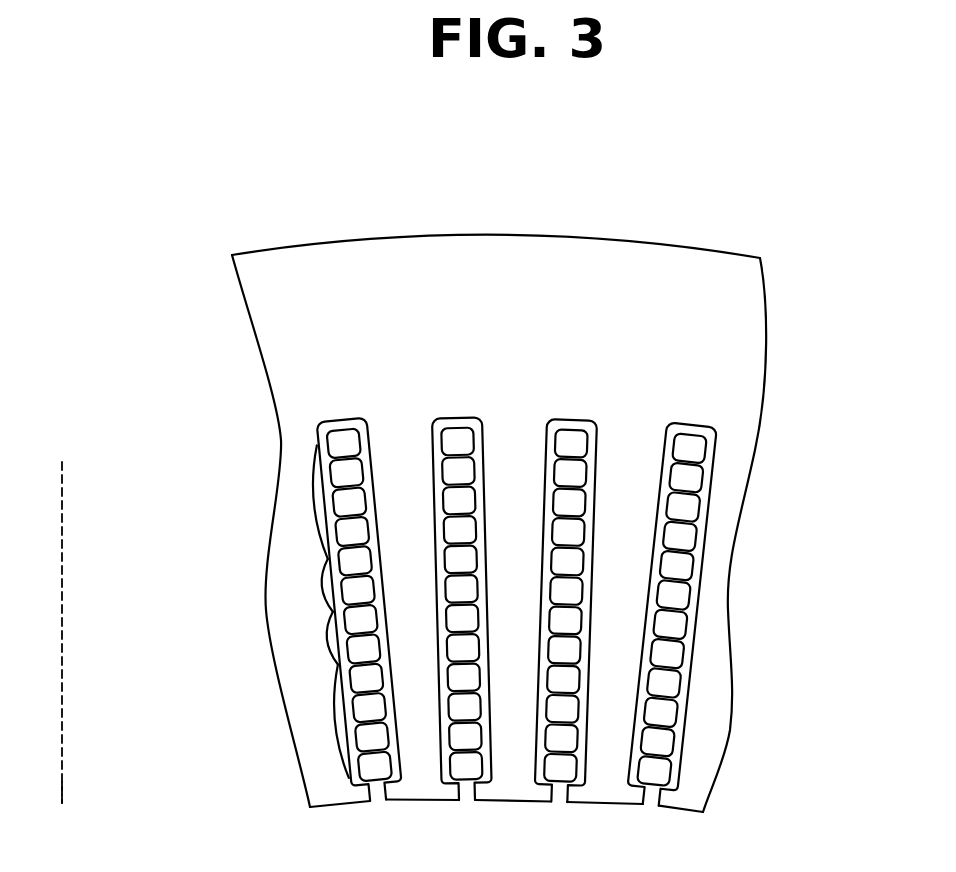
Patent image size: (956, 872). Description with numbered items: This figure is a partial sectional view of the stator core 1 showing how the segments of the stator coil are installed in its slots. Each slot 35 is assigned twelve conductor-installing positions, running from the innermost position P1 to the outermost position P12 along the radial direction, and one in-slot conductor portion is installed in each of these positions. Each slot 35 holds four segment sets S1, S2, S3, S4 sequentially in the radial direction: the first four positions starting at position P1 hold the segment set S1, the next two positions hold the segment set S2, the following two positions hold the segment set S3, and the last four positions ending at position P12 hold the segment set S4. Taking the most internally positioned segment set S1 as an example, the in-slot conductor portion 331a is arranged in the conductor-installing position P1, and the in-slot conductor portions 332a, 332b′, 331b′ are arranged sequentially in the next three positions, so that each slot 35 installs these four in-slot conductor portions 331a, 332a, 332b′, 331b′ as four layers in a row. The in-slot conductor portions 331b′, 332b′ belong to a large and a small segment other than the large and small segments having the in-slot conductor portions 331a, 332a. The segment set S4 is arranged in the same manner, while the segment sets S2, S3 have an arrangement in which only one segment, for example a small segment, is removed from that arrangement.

The stator core 1 is at (732, 353).
The slot 35 is at (458, 418).
The in-slot conductor portion 331b′ is at (667, 683).
The in-slot conductor portion 332b′ is at (665, 715).
The in-slot conductor portion 332a is at (663, 743).
The in-slot conductor portion 331a is at (663, 775).
The conductor-installing position P12 is at (302, 456).
The conductor-installing position P1 is at (333, 786).
The segment set S1 is at (308, 728).
The segment set S2 is at (308, 645).
The segment set S3 is at (302, 589).
The segment set S4 is at (292, 510).